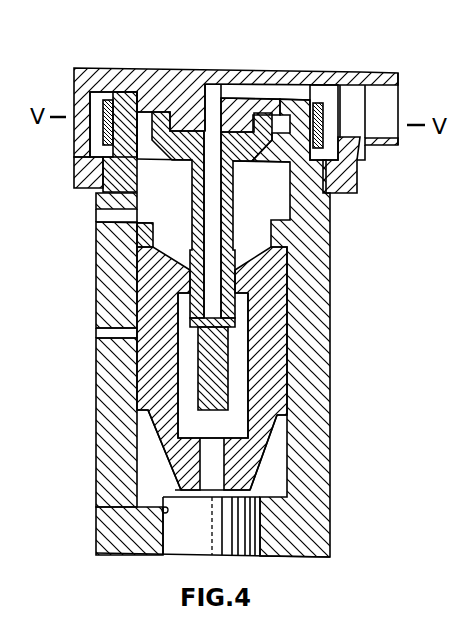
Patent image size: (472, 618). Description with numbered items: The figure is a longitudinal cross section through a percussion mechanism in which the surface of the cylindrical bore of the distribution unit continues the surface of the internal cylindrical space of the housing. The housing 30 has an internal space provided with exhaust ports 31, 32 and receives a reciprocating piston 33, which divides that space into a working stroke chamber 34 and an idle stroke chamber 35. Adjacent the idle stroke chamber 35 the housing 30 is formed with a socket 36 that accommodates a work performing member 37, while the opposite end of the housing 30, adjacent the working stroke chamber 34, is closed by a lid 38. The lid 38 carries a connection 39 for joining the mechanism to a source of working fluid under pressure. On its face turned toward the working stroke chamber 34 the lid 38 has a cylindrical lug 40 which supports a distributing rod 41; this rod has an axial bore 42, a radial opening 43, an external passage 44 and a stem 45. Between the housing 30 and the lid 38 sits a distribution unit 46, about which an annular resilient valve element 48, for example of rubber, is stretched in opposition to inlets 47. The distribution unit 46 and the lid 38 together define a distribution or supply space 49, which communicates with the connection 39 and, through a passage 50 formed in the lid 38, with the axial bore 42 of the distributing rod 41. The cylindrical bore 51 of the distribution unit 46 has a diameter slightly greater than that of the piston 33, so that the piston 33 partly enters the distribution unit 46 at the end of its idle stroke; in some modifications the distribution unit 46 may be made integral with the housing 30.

The housing 30 is at (115, 460).
The exhaust port 31 is at (96, 224).
The exhaust port 32 is at (96, 330).
The piston 33 is at (143, 359).
The working stroke chamber 34 is at (98, 203).
The idle stroke chamber 35 is at (143, 427).
The socket 36 is at (105, 507).
The work performing member 37 is at (178, 548).
The lid 38 is at (80, 175).
The connection 39 is at (398, 148).
The cylindrical lug 40 is at (180, 82).
The distributing rod 41 is at (237, 168).
The axial bore 42 is at (213, 187).
The radial opening 43 is at (249, 312).
The external passage 44 is at (231, 228).
The stem 45 is at (218, 370).
The distribution unit 46 is at (100, 163).
The inlets 47 is at (298, 122).
The annular resilient valve element 48 is at (106, 116).
The supply space 49 is at (332, 145).
The passage 50 is at (236, 69).
The cylindrical bore 51 is at (143, 117).